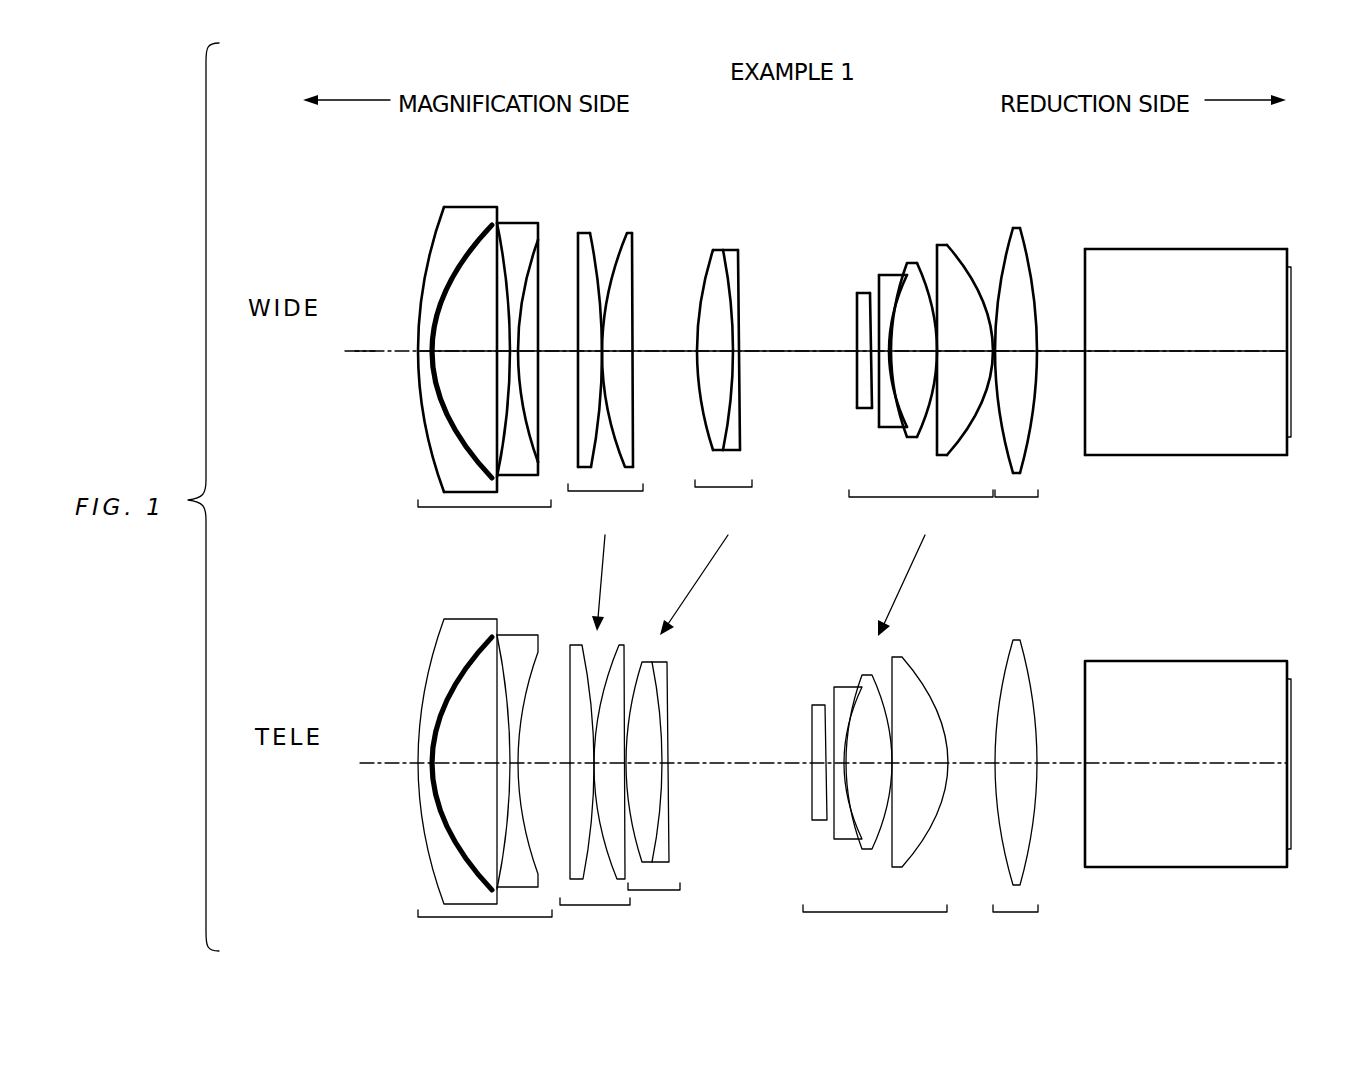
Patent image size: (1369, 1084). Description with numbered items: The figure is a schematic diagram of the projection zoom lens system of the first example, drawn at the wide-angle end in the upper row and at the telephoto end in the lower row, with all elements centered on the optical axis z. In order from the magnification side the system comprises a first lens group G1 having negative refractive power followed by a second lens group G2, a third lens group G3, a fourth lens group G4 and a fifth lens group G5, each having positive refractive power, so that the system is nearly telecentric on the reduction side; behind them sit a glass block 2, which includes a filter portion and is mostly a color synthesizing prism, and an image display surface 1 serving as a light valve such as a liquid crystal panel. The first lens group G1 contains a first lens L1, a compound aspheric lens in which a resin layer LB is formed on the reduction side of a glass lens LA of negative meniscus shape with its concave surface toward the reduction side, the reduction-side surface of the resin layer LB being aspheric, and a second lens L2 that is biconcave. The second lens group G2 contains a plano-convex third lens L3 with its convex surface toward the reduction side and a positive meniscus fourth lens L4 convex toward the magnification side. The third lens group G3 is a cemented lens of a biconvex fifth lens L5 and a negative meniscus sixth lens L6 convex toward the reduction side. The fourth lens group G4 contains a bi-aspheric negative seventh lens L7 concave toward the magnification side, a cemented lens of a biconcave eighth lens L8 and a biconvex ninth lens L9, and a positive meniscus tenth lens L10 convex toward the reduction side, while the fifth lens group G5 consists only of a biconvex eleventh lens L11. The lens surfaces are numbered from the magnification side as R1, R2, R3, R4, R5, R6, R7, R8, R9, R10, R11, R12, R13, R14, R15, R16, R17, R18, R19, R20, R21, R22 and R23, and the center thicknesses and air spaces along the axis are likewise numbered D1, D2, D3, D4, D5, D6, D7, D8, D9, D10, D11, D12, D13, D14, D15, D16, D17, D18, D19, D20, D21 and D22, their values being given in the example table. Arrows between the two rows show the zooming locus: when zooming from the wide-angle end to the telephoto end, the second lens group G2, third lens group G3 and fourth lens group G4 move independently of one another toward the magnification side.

The image display surface 1 is at (1292, 315).
The glass block 2 is at (1200, 252).
The optical axis z is at (362, 352).
The first lens L1 is at (502, 166).
The glass lens LA is at (457, 213).
The resin layer LB is at (488, 228).
The second lens L2 is at (533, 225).
The third lens L3 is at (582, 234).
The fourth lens L4 is at (627, 234).
The fifth lens L5 is at (713, 250).
The sixth lens L6 is at (732, 250).
The seventh lens L7 is at (858, 293).
The eighth lens L8 is at (880, 275).
The ninth lens L9 is at (908, 263).
The tenth lens L10 is at (947, 245).
The eleventh lens L11 is at (1017, 228).
The first lens group G1 is at (485, 727).
The second lens group G2 is at (601, 712).
The third lens group G3 is at (690, 702).
The fourth lens group G4 is at (898, 719).
The fifth lens group G5 is at (1015, 716).
The lens surface R1 is at (440, 233).
The lens surface R2 is at (452, 268).
The lens surface R3 is at (433, 350).
The lens surface R4 is at (506, 302).
The lens surface R5 is at (539, 258).
The lens surface R6 is at (577, 313).
The lens surface R7 is at (585, 234).
The lens surface R8 is at (626, 232).
The lens surface R9 is at (633, 262).
The lens surface R10 is at (697, 283).
The lens surface R11 is at (743, 262).
The lens surface R12 is at (742, 307).
The lens surface R13 is at (858, 347).
The lens surface R14 is at (871, 342).
The lens surface R15 is at (882, 302).
The lens surface R16 is at (895, 275).
The lens surface R17 is at (914, 268).
The lens surface R18 is at (945, 258).
The lens surface R19 is at (982, 290).
The lens surface R20 is at (1013, 230).
The lens surface R21 is at (1030, 277).
The lens surface R22 is at (1084, 251).
The lens surface R23 is at (1289, 258).
The center thickness or air space D1 is at (419, 352).
The center thickness or air space D2 is at (447, 352).
The center thickness or air space D3 is at (487, 352).
The center thickness or air space D4 is at (517, 352).
The center thickness or air space D5 is at (555, 352).
The center thickness or air space D6 is at (587, 352).
The center thickness or air space D7 is at (600, 352).
The center thickness or air space D8 is at (619, 352).
The center thickness or air space D9 is at (660, 352).
The center thickness or air space D10 is at (708, 352).
The center thickness or air space D11 is at (737, 352).
The center thickness or air space D12 is at (783, 352).
The center thickness or air space D13 is at (853, 352).
The center thickness or air space D14 is at (875, 352).
The center thickness or air space D15 is at (883, 352).
The center thickness or air space D16 is at (913, 352).
The center thickness or air space D17 is at (935, 352).
The center thickness or air space D18 is at (965, 352).
The center thickness or air space D19 is at (993, 352).
The center thickness or air space D20 is at (1025, 352).
The center thickness or air space D21 is at (1062, 352).
The center thickness or air space D22 is at (1177, 352).